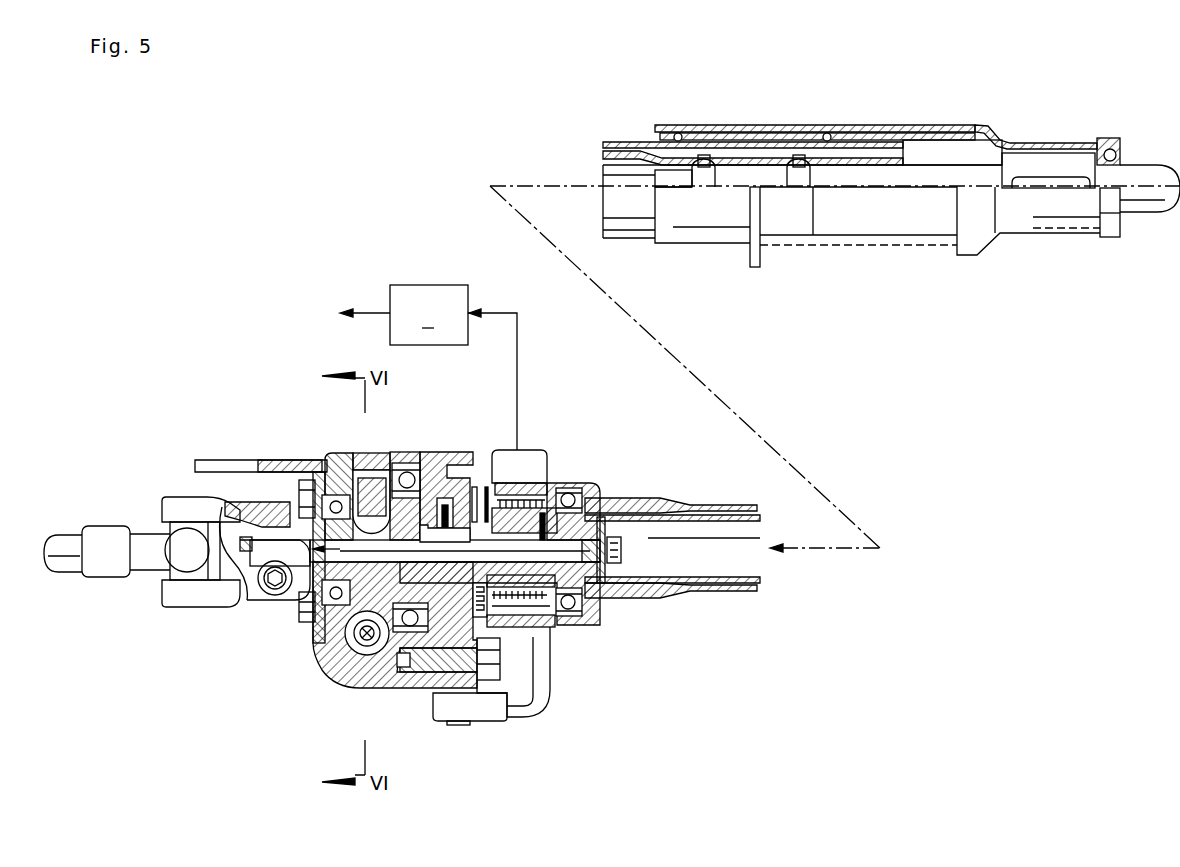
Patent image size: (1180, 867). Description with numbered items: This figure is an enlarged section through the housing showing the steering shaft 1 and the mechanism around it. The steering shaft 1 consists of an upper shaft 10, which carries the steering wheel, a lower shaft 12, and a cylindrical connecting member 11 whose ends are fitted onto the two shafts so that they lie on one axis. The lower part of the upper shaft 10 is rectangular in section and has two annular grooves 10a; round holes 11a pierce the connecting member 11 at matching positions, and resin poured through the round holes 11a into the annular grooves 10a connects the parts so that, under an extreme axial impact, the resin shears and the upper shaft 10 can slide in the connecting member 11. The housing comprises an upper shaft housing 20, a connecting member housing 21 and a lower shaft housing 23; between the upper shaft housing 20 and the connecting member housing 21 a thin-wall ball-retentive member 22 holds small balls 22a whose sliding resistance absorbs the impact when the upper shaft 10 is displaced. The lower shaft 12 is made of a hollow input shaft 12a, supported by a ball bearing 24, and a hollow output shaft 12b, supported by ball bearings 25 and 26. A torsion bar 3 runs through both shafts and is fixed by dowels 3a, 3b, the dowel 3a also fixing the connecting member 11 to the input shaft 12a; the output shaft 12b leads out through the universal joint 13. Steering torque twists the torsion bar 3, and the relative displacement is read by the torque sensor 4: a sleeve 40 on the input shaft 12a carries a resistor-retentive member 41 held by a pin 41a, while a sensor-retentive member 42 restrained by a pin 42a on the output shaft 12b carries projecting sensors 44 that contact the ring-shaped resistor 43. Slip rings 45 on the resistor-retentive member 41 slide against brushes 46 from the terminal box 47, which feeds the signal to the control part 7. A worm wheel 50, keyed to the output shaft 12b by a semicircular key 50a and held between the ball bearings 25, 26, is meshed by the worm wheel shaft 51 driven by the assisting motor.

The steering shaft 1 is at (922, 153).
The torsion bar 3 is at (600, 505).
The dowel 3a is at (618, 540).
The dowel 3b is at (242, 560).
The torque sensor 4 is at (507, 630).
The control part 7 is at (428, 367).
The upper shaft 10 is at (960, 170).
The annular groove 10a is at (703, 188).
The connecting member 11 is at (628, 155).
The round hole 11a is at (703, 155).
The lower shaft 12 is at (476, 562).
The input shaft 12a is at (598, 600).
The output shaft 12b is at (316, 602).
The universal joint 13 is at (190, 505).
The upper shaft housing 20 is at (1005, 145).
The connecting member housing 21 is at (610, 142).
The ball-retentive member 22 is at (752, 128).
The small ball 22a is at (678, 133).
The lower shaft housing 23 is at (463, 528).
The ball bearing 24 is at (575, 610).
The ball bearing 25 is at (425, 676).
The ball bearing 26 is at (352, 640).
The sleeve 40 is at (542, 622).
The resistor-retentive member 41 is at (548, 620).
The pin 41a is at (565, 545).
The sensor-retentive member 42 is at (455, 668).
The pin 42a is at (432, 505).
The resistor 43 is at (489, 520).
The sensor 44 is at (485, 620).
The slip ring 45 is at (522, 618).
The brush 46 is at (507, 450).
The terminal box 47 is at (542, 480).
The worm wheel 50 is at (345, 478).
The semicircular key 50a is at (372, 530).
The worm wheel shaft 51 is at (362, 648).